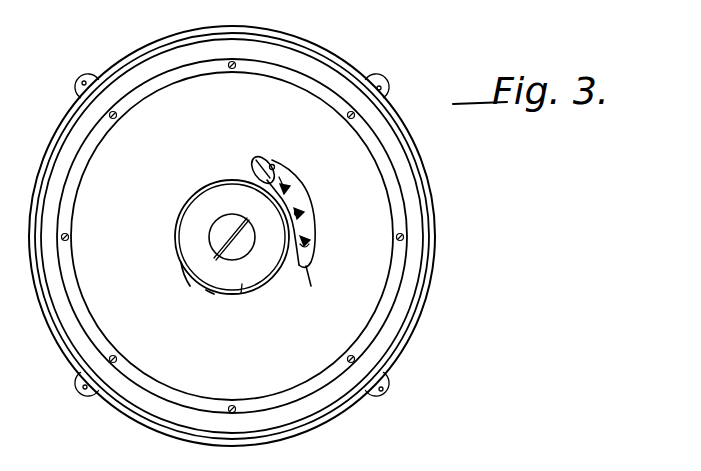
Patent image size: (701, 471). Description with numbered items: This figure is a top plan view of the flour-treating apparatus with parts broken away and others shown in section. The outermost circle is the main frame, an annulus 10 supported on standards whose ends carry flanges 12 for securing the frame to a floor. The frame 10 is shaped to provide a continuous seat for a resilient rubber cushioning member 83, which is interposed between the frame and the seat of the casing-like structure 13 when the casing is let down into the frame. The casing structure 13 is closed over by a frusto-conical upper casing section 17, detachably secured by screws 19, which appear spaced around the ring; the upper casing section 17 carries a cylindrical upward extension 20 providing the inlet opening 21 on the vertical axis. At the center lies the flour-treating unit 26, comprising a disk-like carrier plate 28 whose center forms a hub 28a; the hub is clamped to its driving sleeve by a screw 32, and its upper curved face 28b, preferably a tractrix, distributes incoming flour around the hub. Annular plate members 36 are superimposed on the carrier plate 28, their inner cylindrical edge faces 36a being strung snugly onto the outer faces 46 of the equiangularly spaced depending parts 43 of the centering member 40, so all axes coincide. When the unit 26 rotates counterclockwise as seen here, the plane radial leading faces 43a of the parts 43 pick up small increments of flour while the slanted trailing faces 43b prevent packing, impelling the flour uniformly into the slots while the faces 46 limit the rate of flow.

The annulus 10 is at (437, 224).
The flanges 12 is at (76, 92).
The casing-like structure 13 is at (407, 315).
The upper casing section 17 is at (318, 88).
The screws 19 is at (62, 239).
The cylindrical upward extension 20 is at (213, 291).
The inlet opening 21 is at (241, 296).
The flour-treating unit 26 is at (311, 286).
The carrier plate 28 is at (186, 259).
The hub 28a is at (212, 263).
The upper curved face 28b is at (194, 231).
The screw 32 is at (248, 247).
The plate members 36 is at (290, 178).
The cylindrical edge face 36a is at (307, 233).
The member 40 is at (262, 157).
The vertically extending parts 43 is at (280, 193).
The leading faces 43a is at (290, 183).
The trailing faces 43b is at (309, 238).
The outer faces 46 is at (268, 158).
The cushioning member 83 is at (418, 186).